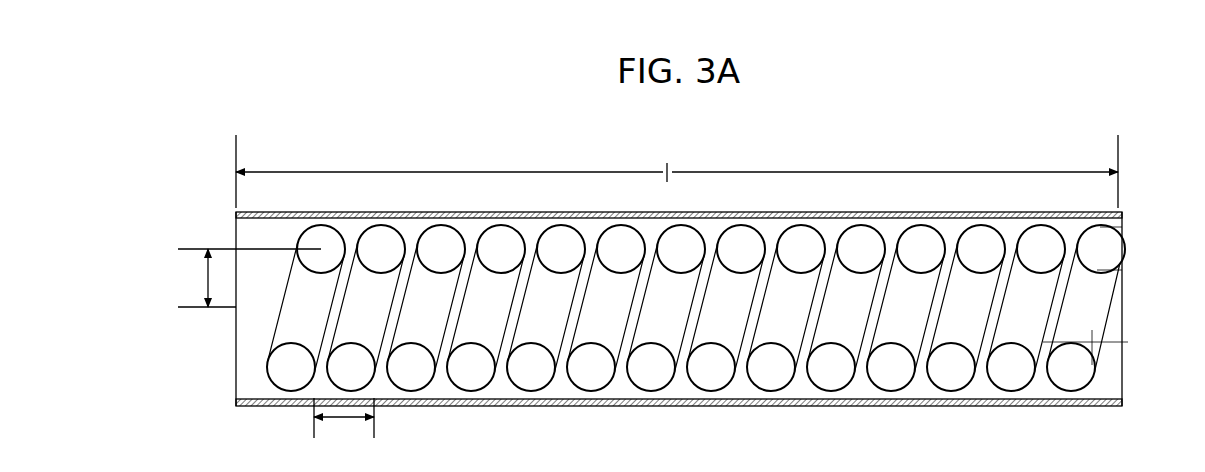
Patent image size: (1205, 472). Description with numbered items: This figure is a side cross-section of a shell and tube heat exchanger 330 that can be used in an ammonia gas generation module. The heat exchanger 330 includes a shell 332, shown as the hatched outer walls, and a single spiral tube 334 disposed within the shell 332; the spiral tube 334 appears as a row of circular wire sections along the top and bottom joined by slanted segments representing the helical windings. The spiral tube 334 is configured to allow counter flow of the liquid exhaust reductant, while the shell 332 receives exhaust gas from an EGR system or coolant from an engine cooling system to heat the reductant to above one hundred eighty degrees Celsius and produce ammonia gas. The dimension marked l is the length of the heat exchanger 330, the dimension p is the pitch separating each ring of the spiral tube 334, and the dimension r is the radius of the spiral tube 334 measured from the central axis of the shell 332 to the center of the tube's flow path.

The shell and tube heat exchanger 330 is at (1052, 128).
The shell 332 is at (988, 403).
The spiral tube 334 is at (1100, 297).